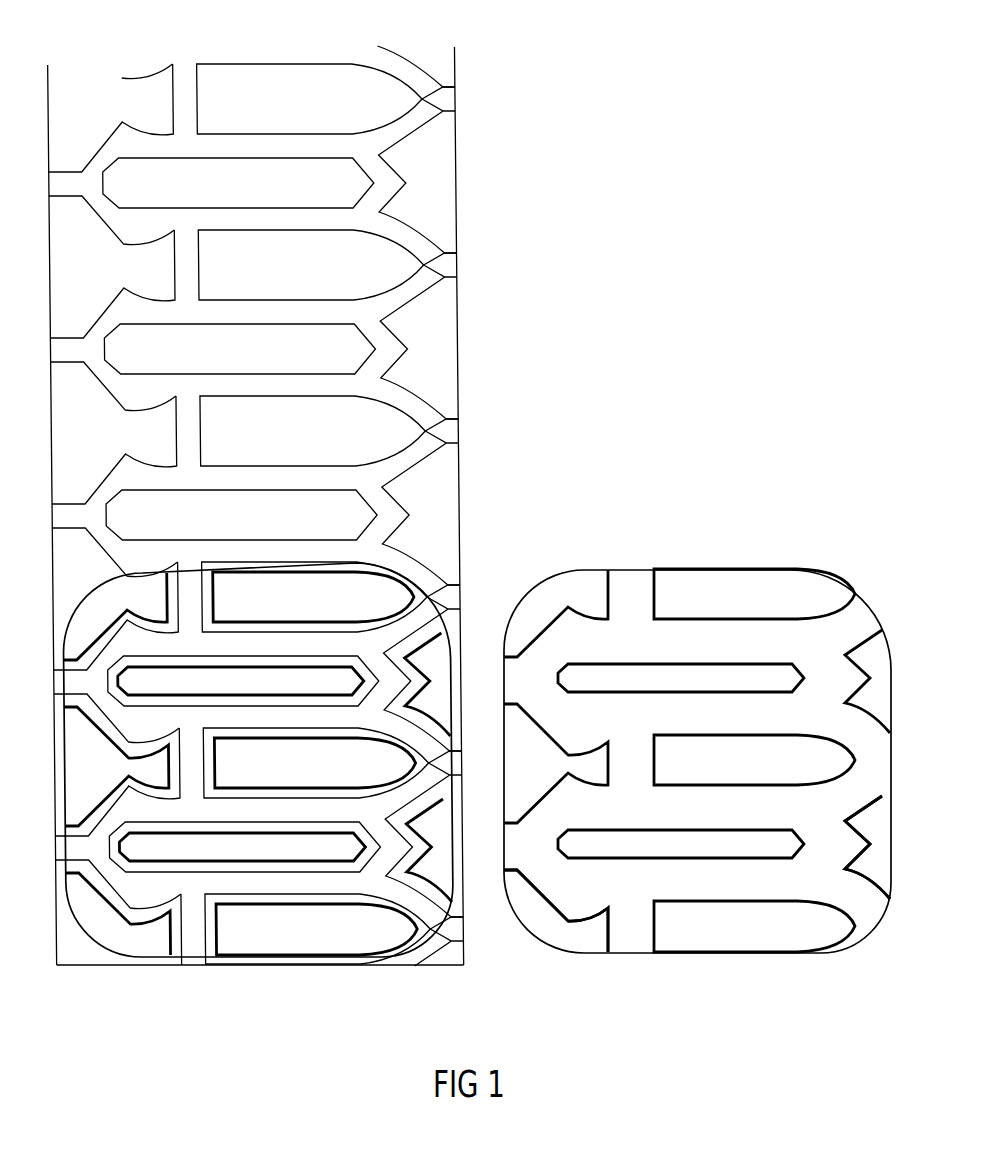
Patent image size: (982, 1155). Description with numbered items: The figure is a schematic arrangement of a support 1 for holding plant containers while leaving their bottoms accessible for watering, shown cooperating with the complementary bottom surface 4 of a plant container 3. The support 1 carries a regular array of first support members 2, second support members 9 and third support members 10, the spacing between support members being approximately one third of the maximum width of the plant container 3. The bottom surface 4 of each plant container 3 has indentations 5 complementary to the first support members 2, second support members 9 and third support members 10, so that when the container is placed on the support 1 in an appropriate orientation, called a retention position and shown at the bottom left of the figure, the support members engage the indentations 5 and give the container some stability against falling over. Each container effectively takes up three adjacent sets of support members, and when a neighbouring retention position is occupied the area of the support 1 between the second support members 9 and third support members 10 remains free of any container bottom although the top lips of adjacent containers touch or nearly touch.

The support 1 is at (459, 169).
The first support members 2 is at (117, 309).
The plant container 3 is at (363, 593).
The bottom surface 4 is at (100, 779).
The indentations 5 is at (585, 807).
The second support members 9 is at (312, 475).
The third support members 10 is at (285, 387).